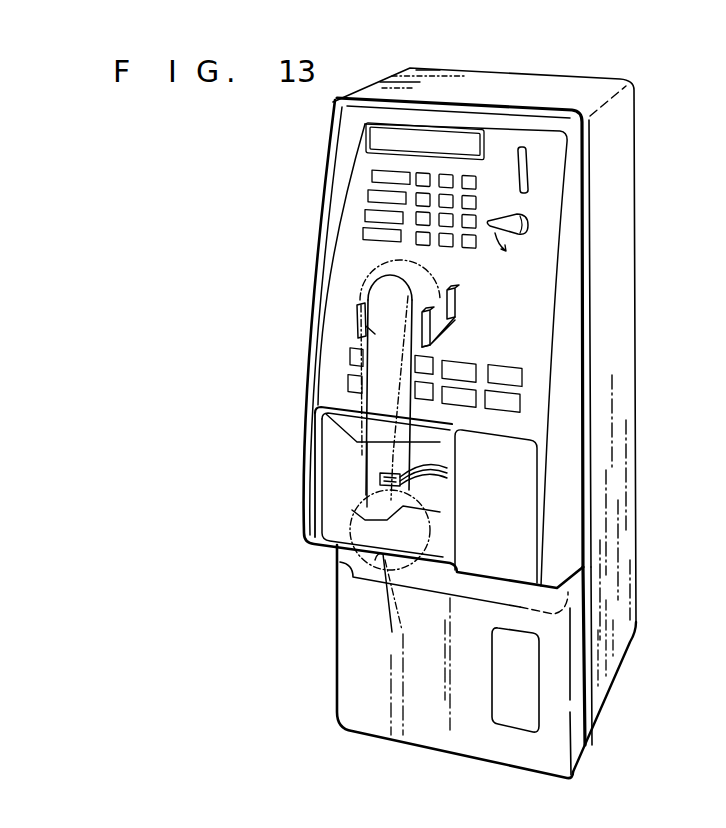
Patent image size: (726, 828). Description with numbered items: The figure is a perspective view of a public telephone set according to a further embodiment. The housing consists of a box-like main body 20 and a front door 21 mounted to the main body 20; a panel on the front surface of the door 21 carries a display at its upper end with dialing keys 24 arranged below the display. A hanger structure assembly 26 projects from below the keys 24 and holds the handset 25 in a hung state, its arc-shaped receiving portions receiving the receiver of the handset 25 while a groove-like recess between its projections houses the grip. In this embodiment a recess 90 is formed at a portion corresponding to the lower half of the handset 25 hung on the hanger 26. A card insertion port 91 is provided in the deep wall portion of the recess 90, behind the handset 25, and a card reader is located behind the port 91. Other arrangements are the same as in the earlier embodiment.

The main body 20 is at (620, 467).
The front door 21 is at (572, 420).
The dialing keys 24 is at (471, 174).
The handset 25 is at (380, 320).
The hanger structure assembly 26 is at (455, 313).
The recess 90 is at (333, 490).
The card insertion port 91 is at (432, 482).